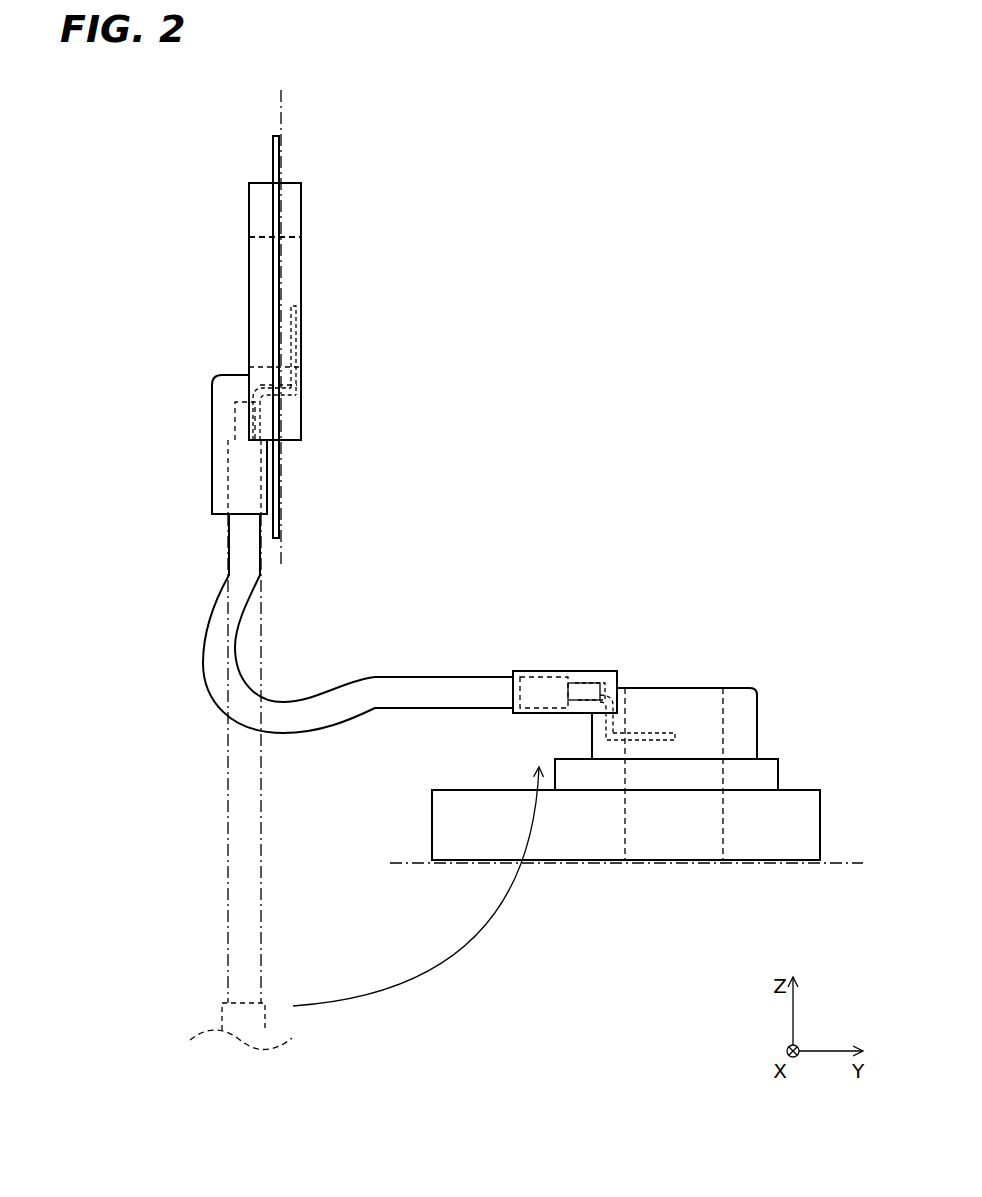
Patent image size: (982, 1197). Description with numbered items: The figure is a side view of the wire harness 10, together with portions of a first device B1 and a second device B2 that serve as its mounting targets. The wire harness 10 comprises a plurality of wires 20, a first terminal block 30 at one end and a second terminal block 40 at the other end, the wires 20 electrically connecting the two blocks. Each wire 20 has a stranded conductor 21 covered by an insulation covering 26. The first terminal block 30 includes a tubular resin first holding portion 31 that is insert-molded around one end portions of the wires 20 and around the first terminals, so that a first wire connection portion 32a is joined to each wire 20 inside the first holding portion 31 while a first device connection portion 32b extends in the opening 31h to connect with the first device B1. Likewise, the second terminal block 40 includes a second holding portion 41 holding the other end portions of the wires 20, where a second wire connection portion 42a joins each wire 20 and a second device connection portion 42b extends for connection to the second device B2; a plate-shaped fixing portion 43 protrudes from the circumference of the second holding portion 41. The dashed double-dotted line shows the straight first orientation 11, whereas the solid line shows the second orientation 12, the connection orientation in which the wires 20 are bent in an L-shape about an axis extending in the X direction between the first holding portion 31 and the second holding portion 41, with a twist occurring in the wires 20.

The wire harness 10 is at (592, 325).
The first orientation 11 is at (228, 866).
The second orientation 12 is at (393, 612).
The wires 20 is at (353, 720).
The stranded conductor 21 is at (235, 420).
The insulation covering 26 is at (228, 470).
The first terminal block 30 is at (219, 252).
The first holding portion 31 is at (301, 194).
The opening 31h is at (293, 246).
The first wire connection portion 32a is at (275, 415).
The first device connection portion 32b is at (300, 316).
The second terminal block 40 is at (780, 670).
The second holding portion 41 is at (608, 672).
The second wire connection portion 42a is at (585, 712).
The second device connection portion 42b is at (652, 735).
The fixing portion 43 is at (800, 790).
The first device B1 is at (283, 545).
The second device B2 is at (415, 868).